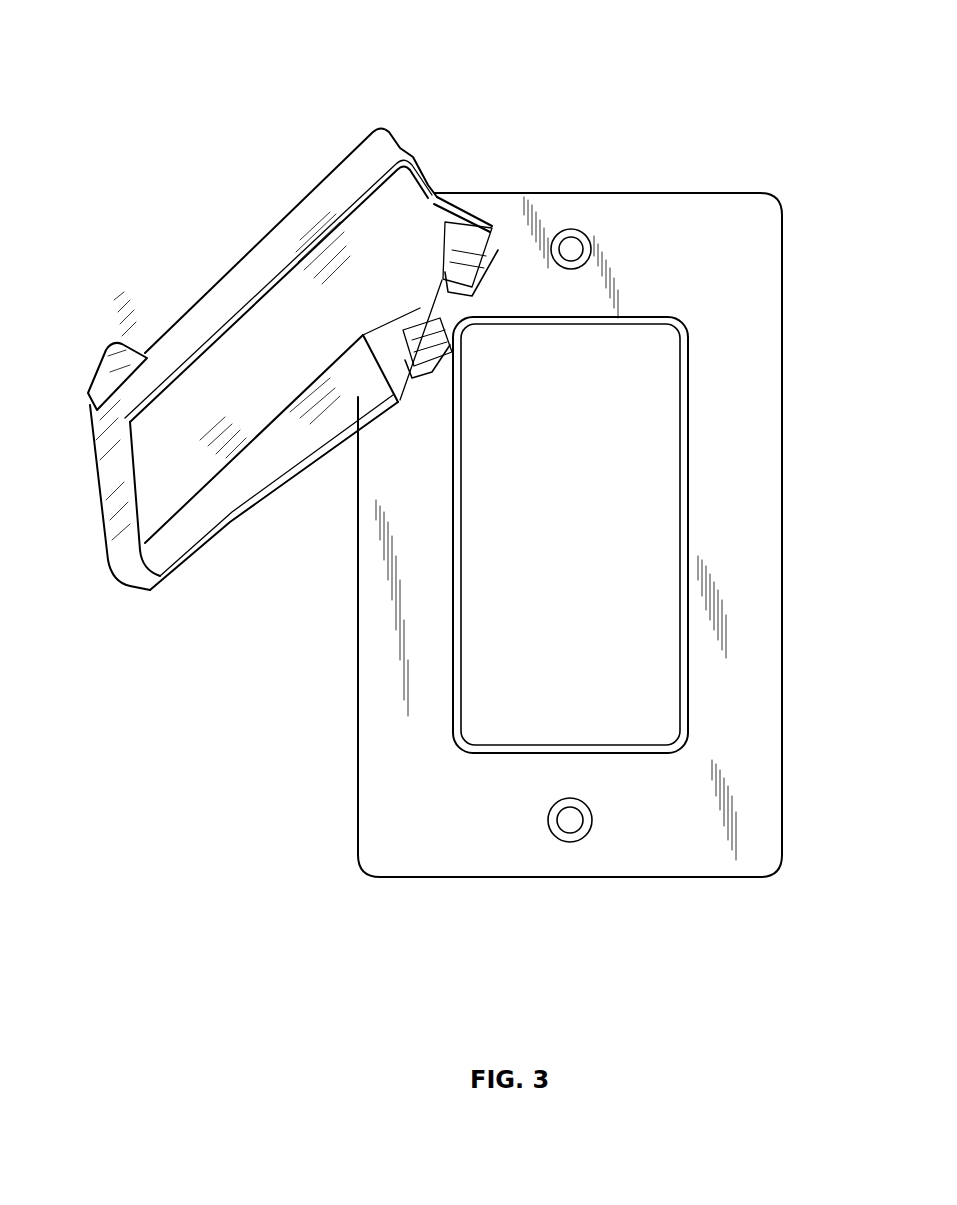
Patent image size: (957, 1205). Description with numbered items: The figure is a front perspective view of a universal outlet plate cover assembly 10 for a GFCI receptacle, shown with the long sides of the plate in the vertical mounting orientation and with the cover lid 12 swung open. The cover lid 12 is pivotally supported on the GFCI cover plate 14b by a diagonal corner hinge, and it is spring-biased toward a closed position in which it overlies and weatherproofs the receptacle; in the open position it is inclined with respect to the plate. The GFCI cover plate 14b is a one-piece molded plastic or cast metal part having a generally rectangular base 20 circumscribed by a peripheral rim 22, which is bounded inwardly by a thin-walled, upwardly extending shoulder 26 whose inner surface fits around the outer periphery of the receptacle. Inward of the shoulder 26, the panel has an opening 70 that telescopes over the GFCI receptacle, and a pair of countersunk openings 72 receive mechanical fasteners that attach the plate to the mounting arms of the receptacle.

The electrical device cover assembly 10 is at (467, 84).
The cover lid 12 is at (190, 306).
The base 20 is at (750, 330).
The peripheral rim 22 is at (358, 848).
The shoulder 26 is at (683, 535).
The opening 70 is at (655, 660).
The countersunk openings 72 is at (573, 240).
The GFCI cover plate 14b is at (733, 878).